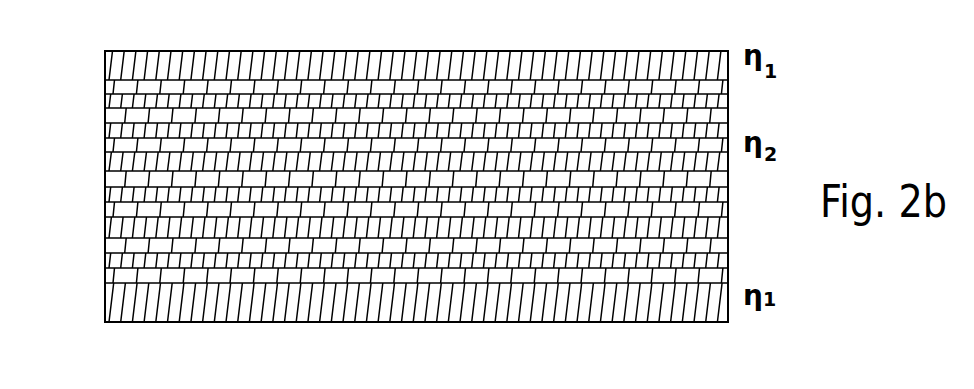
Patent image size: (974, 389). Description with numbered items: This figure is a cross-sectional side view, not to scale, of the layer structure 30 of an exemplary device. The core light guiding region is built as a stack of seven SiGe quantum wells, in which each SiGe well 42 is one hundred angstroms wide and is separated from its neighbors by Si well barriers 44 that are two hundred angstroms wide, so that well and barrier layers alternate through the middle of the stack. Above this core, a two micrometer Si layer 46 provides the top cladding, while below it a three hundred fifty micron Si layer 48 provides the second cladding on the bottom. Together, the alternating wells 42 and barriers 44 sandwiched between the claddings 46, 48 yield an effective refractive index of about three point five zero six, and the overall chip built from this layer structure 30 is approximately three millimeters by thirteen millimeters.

The multilayer optical stack 30 is at (145, 31).
The SiGe0.3 well 42 is at (105, 151).
The Si well barrier 44 is at (105, 100).
The Si layer (top cladding) 46 is at (105, 68).
The Si layer (bottom cladding) 48 is at (105, 301).